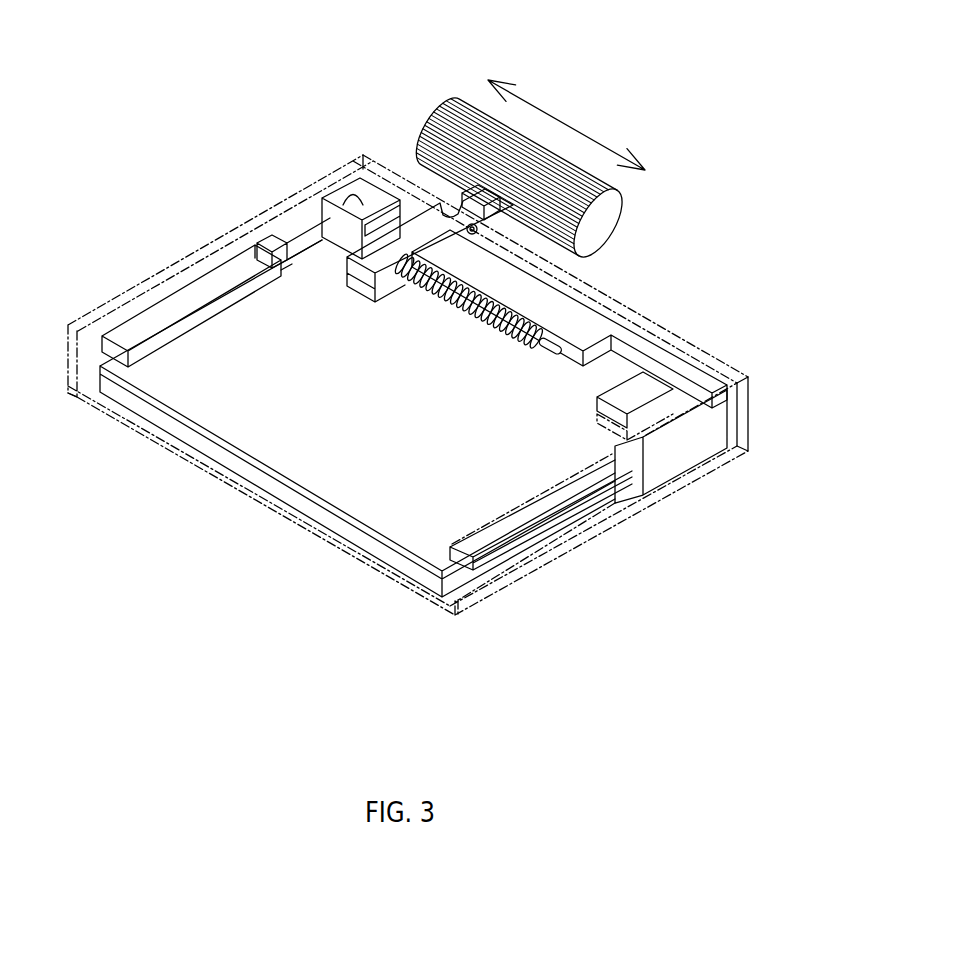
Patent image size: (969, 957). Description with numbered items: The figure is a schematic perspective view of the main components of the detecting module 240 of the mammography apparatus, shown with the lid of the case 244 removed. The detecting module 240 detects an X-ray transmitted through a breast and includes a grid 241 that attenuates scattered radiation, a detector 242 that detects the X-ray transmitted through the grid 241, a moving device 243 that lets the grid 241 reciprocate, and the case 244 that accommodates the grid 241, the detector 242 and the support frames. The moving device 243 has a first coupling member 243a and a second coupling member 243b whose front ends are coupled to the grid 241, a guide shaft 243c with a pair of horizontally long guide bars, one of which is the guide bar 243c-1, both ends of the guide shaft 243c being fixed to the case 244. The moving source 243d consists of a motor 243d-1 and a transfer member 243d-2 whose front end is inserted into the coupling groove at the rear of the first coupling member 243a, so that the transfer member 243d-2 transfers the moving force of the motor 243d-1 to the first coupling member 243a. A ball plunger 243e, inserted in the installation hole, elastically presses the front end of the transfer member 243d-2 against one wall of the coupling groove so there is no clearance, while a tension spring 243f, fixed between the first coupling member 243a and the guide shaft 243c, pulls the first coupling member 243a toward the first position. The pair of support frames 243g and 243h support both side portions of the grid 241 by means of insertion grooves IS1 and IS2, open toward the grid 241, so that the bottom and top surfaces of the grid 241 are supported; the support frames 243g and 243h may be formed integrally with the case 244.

The detecting module 240 is at (703, 348).
The grid 241 is at (410, 562).
The detector 242 is at (277, 490).
The moving device 243 is at (438, 104).
The first coupling member 243a is at (362, 257).
The second coupling member 243b is at (640, 404).
The guide shaft 243c is at (655, 347).
The guide bar 243c-1 is at (352, 193).
The moving source 243d is at (255, 54).
The motor 243d-1 is at (433, 117).
The transfer member 243d-2 is at (463, 178).
The ball plunger 243e is at (480, 230).
The tension spring 243f is at (512, 318).
The support frame 243g is at (132, 338).
The support frame 243h is at (505, 523).
The case 244 is at (480, 590).
The insertion groove IS1 is at (100, 364).
The insertion groove IS2 is at (463, 588).